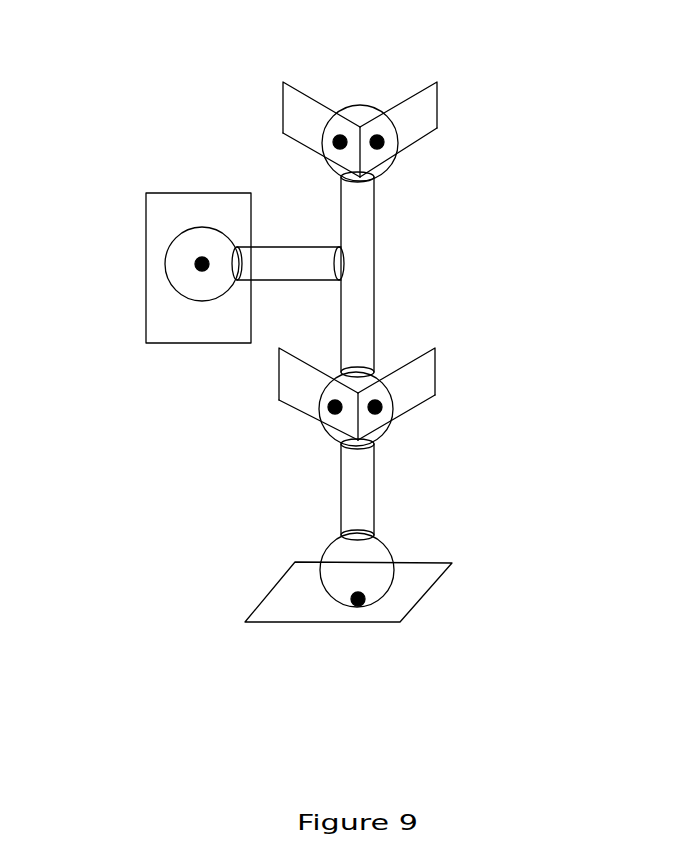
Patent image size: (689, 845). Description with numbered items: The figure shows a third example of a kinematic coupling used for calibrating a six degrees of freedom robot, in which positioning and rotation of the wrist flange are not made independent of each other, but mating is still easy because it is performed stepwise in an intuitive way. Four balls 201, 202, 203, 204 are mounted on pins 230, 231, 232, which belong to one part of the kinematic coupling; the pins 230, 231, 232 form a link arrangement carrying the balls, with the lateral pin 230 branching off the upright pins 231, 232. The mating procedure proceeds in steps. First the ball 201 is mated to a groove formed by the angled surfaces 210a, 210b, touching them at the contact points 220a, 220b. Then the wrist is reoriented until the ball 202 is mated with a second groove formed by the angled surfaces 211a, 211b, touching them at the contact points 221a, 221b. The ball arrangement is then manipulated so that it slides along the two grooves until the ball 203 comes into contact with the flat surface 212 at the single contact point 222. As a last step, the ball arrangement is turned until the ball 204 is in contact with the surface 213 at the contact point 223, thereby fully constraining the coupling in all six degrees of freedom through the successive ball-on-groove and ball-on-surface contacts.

The ball 201 is at (362, 113).
The ball 202 is at (390, 433).
The ball 203 is at (384, 550).
The ball 204 is at (173, 272).
The angled surface 210a is at (308, 107).
The angled surface 210b is at (427, 105).
The angled surface 211a is at (287, 390).
The angled surface 211b is at (422, 378).
The surface 212 is at (417, 583).
The surface 213 is at (153, 225).
The contact point 220a is at (340, 143).
The contact point 220b is at (377, 143).
The contact point 221a is at (335, 407).
The contact point 221b is at (375, 407).
The contact point 222 is at (358, 599).
The contact point 223 is at (202, 264).
The pin 230 is at (310, 262).
The pin 231 is at (365, 314).
The pin 232 is at (352, 483).